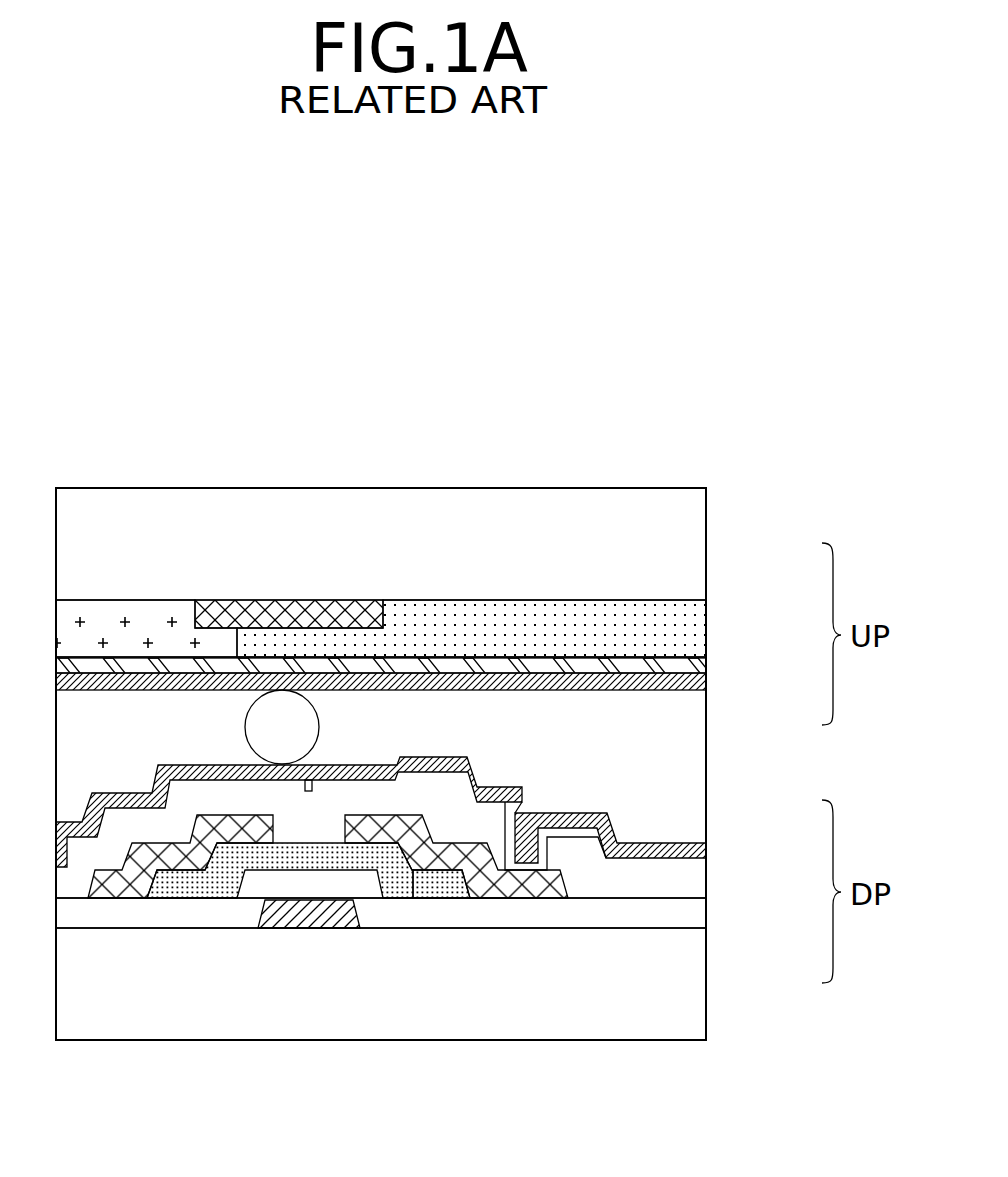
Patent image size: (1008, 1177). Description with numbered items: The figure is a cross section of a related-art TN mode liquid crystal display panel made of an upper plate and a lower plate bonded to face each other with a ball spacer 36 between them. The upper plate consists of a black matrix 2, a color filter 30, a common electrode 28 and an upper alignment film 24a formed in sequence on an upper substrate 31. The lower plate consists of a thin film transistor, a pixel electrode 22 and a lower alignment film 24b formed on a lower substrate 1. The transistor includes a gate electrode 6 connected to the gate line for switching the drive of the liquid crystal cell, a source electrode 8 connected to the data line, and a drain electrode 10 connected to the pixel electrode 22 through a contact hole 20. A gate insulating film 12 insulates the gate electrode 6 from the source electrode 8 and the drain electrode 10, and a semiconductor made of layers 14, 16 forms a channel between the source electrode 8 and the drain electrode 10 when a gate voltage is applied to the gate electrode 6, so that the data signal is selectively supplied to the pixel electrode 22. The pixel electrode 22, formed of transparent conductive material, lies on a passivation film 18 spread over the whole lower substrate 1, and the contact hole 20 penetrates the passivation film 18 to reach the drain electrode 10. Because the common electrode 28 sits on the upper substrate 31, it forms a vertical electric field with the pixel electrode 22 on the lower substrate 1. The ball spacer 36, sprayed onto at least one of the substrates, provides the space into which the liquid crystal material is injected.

The lower substrate 1 is at (700, 957).
The black matrix 2 is at (340, 598).
The gate electrode 6 is at (307, 915).
The source electrode 8 is at (117, 898).
The drain electrode 10 is at (490, 898).
The gate insulating film 12 is at (700, 913).
The semiconductor layer 14 is at (208, 898).
The semiconductor layer 16 is at (416, 898).
The passivation film 18 is at (700, 887).
The contact hole 20 is at (538, 816).
The pixel electrode 22 is at (706, 852).
The upper alignment film 24a is at (705, 686).
The lower alignment film 24b is at (705, 835).
The common electrode 28 is at (700, 662).
The color filter 30 is at (700, 620).
The upper substrate 31 is at (700, 552).
The ball spacer 36 is at (318, 720).